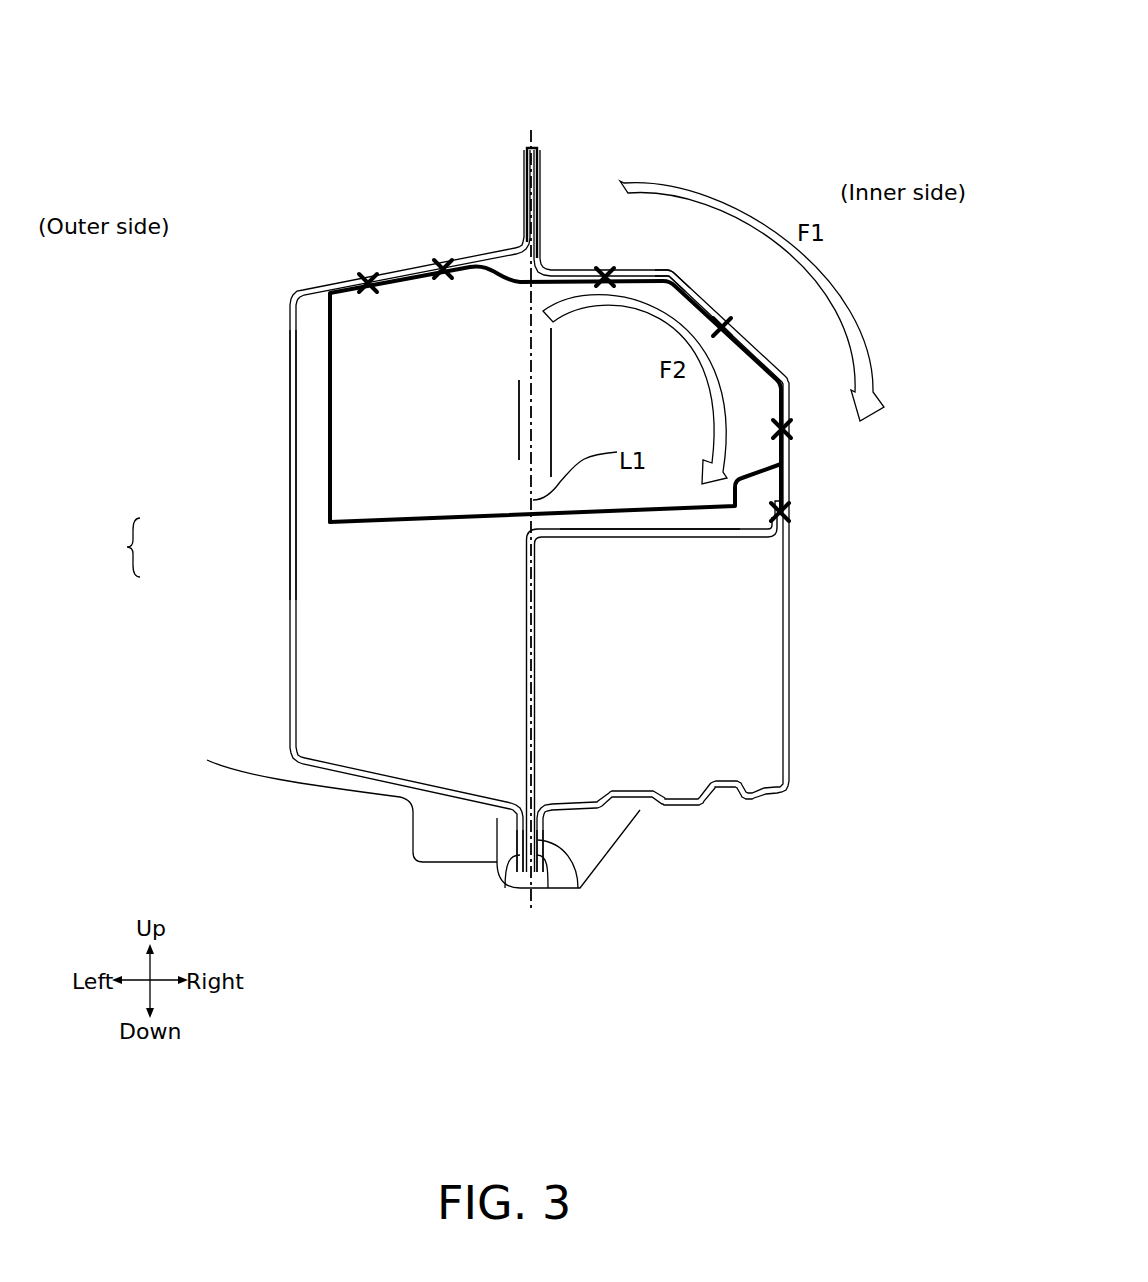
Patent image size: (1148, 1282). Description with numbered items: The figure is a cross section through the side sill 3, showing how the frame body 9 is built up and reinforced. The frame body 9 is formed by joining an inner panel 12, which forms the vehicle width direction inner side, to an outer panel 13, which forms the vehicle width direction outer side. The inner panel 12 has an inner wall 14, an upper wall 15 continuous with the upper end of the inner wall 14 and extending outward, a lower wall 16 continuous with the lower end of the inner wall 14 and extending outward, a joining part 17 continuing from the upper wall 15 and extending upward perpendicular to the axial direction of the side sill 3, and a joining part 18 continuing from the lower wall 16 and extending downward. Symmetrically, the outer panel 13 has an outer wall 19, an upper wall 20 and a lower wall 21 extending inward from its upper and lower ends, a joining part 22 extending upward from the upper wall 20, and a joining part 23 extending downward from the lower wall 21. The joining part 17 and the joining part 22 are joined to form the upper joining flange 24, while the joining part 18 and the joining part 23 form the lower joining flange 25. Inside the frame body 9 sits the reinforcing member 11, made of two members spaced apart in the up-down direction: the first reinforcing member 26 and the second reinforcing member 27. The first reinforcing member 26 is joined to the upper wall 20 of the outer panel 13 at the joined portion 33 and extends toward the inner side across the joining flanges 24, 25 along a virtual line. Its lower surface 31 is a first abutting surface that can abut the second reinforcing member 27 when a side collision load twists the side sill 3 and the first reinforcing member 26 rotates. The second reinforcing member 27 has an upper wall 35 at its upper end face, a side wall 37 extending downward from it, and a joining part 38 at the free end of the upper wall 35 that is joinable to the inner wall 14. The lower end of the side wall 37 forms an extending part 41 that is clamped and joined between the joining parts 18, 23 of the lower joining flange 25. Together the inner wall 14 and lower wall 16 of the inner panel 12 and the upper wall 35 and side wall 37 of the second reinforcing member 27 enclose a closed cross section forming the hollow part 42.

The side sill 3 is at (630, 140).
The frame body 9 is at (484, 511).
The reinforcing member 11 is at (437, 600).
The inner panel 12 is at (580, 272).
The outer panel 13 is at (295, 296).
The inner wall 14 is at (791, 565).
The upper wall 15 is at (664, 268).
The lower wall 16 is at (745, 800).
The joining part 17 is at (538, 193).
The joining part 18 is at (539, 872).
The outer wall 19 is at (288, 335).
The upper wall 20 is at (362, 276).
The lower wall 21 is at (331, 776).
The joining part 22 is at (525, 192).
The joining part 23 is at (519, 872).
The joining flange 24 is at (533, 144).
The joining flange 25 is at (527, 917).
The first reinforcing member 26 is at (331, 460).
The second reinforcing member 27 is at (527, 593).
The lower surface 31 is at (688, 509).
The joined portion 33 is at (371, 276).
The upper wall 35 is at (648, 538).
The side wall 37 is at (534, 722).
The joining part 38 is at (790, 513).
The extending part 41 is at (578, 890).
The hollow part 42 is at (704, 690).